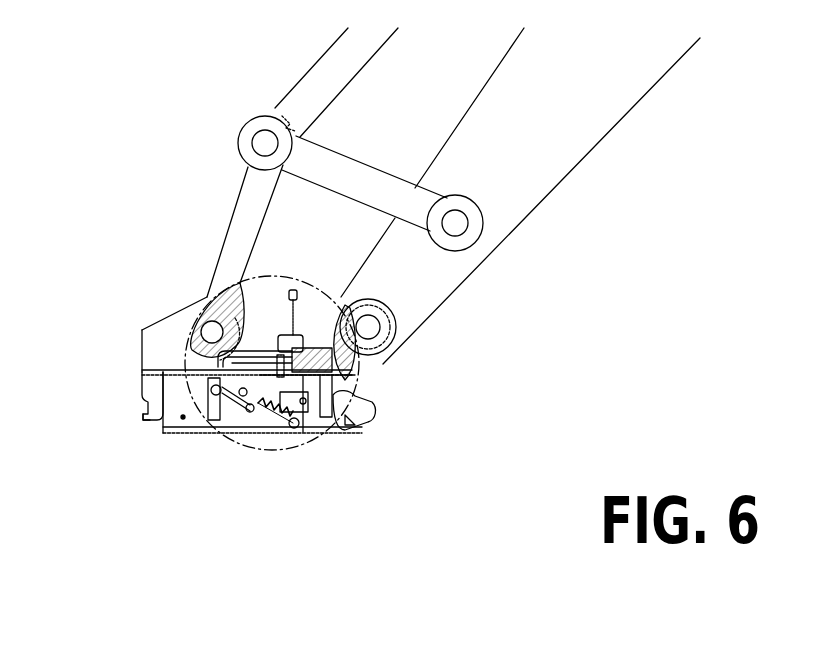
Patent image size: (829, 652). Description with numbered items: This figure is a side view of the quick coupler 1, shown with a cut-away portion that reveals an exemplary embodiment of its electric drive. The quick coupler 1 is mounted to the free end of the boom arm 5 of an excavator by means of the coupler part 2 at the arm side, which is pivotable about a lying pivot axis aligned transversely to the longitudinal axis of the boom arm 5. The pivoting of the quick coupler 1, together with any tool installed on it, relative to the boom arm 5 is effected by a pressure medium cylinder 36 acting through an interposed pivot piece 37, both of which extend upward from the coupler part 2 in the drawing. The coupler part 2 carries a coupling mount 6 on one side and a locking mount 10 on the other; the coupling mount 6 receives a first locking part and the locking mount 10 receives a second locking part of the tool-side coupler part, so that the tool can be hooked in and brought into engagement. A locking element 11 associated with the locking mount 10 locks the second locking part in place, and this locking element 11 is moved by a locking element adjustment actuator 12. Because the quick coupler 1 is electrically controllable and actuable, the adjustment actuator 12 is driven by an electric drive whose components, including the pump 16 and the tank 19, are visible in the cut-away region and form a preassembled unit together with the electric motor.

The quick coupler 1 is at (332, 523).
The coupler part at the arm side 2 is at (187, 278).
The boom arm 5 is at (613, 98).
The coupling mount 6 is at (360, 395).
The locking mount 10 is at (143, 403).
The locking element 11 is at (140, 422).
The locking element adjustment actuator 12 is at (243, 422).
The pump 16 is at (203, 392).
The tank 19 is at (217, 390).
The pressure medium cylinder 36 is at (323, 82).
The pivot piece 37 is at (420, 213).